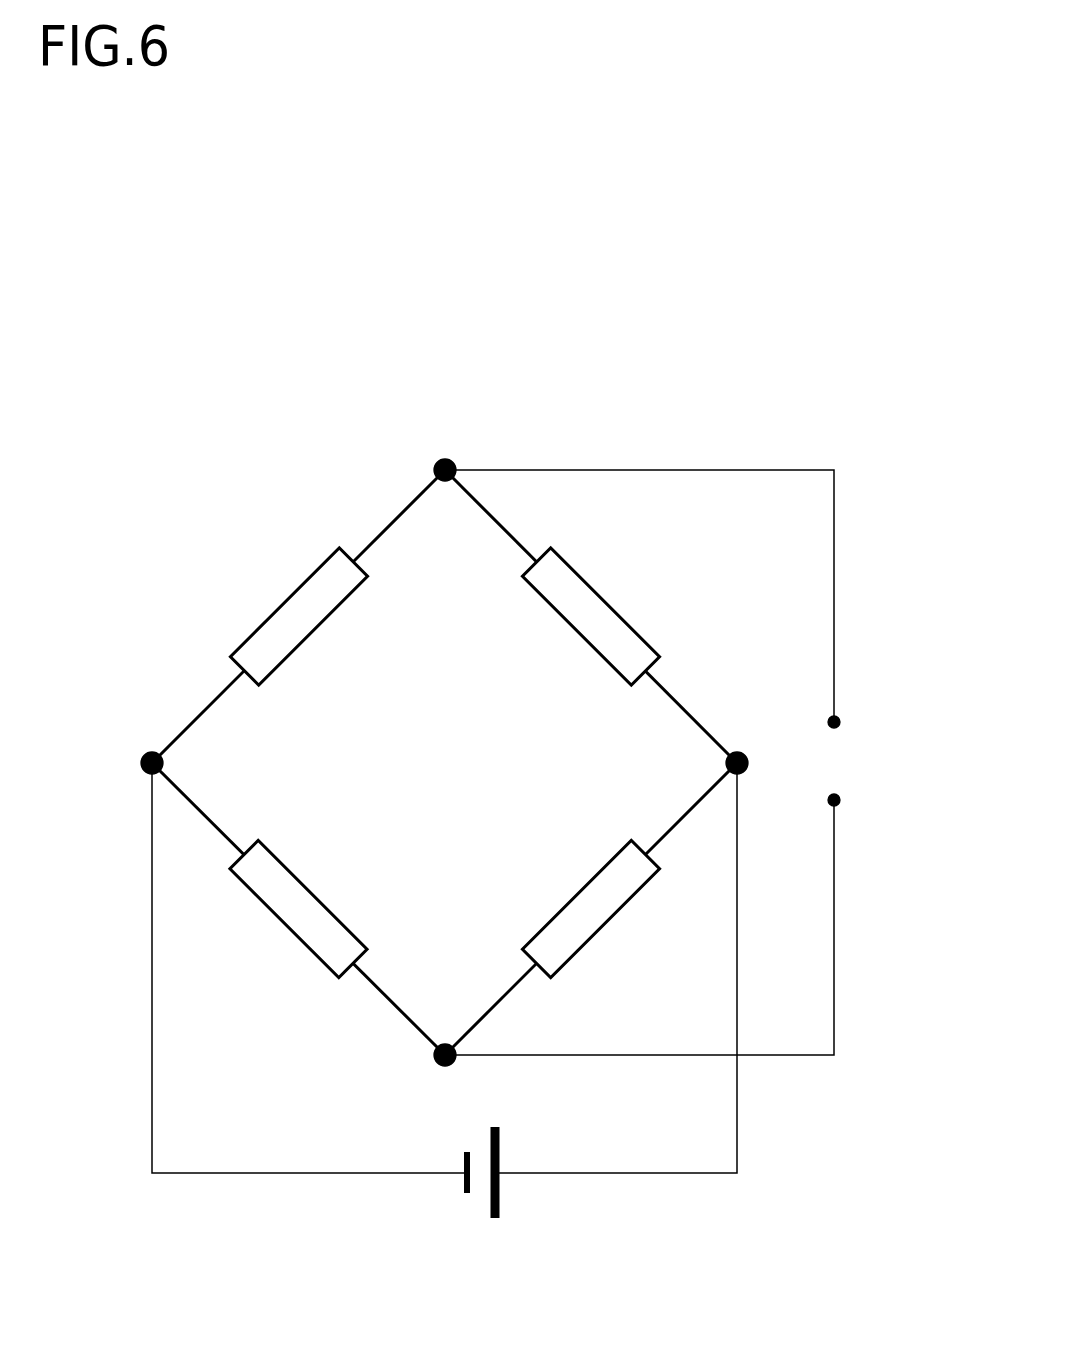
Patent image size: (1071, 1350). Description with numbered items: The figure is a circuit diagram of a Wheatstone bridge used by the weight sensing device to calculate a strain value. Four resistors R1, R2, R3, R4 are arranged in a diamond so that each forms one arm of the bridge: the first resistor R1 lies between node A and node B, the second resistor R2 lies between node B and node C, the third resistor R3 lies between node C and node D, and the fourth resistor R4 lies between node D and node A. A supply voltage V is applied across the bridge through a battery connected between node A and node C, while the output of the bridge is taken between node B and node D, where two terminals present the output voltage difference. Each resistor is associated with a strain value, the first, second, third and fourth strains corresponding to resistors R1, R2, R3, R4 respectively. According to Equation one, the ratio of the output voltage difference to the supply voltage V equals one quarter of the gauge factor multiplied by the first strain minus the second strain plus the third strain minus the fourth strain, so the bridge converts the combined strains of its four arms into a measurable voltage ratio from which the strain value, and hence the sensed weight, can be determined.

The first resistor R1 is at (298, 616).
The second resistor R2 is at (590, 616).
The third resistor R3 is at (590, 906).
The fourth resistor R4 is at (298, 908).
The bridge node A is at (138, 768).
The bridge node B is at (447, 447).
The bridge node C is at (753, 766).
The bridge node D is at (435, 1072).
The supply voltage V is at (444, 1008).